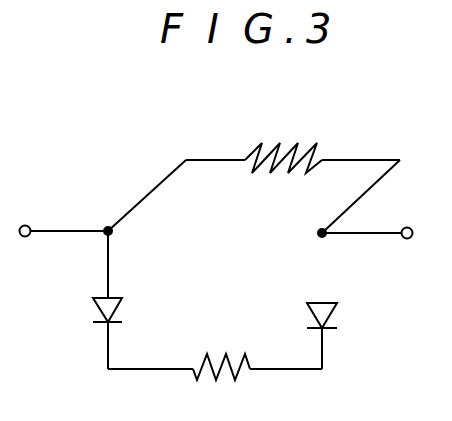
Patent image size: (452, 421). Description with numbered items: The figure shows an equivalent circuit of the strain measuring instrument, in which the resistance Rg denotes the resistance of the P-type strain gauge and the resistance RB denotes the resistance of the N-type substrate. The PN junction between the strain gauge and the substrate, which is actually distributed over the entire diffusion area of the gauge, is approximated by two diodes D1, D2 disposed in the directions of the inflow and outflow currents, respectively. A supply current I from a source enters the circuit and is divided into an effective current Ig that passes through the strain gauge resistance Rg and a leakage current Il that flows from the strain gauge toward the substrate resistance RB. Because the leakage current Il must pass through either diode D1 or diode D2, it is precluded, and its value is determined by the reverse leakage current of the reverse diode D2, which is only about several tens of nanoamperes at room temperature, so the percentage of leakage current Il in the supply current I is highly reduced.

The resistance in the strain gauge Rg is at (283, 145).
The resistance in the substrate RB is at (221, 383).
The diode D1 is at (93, 310).
The reverse diode D2 is at (333, 310).
The effective current Ig is at (138, 186).
The leakage current Il is at (99, 253).
The supply current I is at (78, 219).